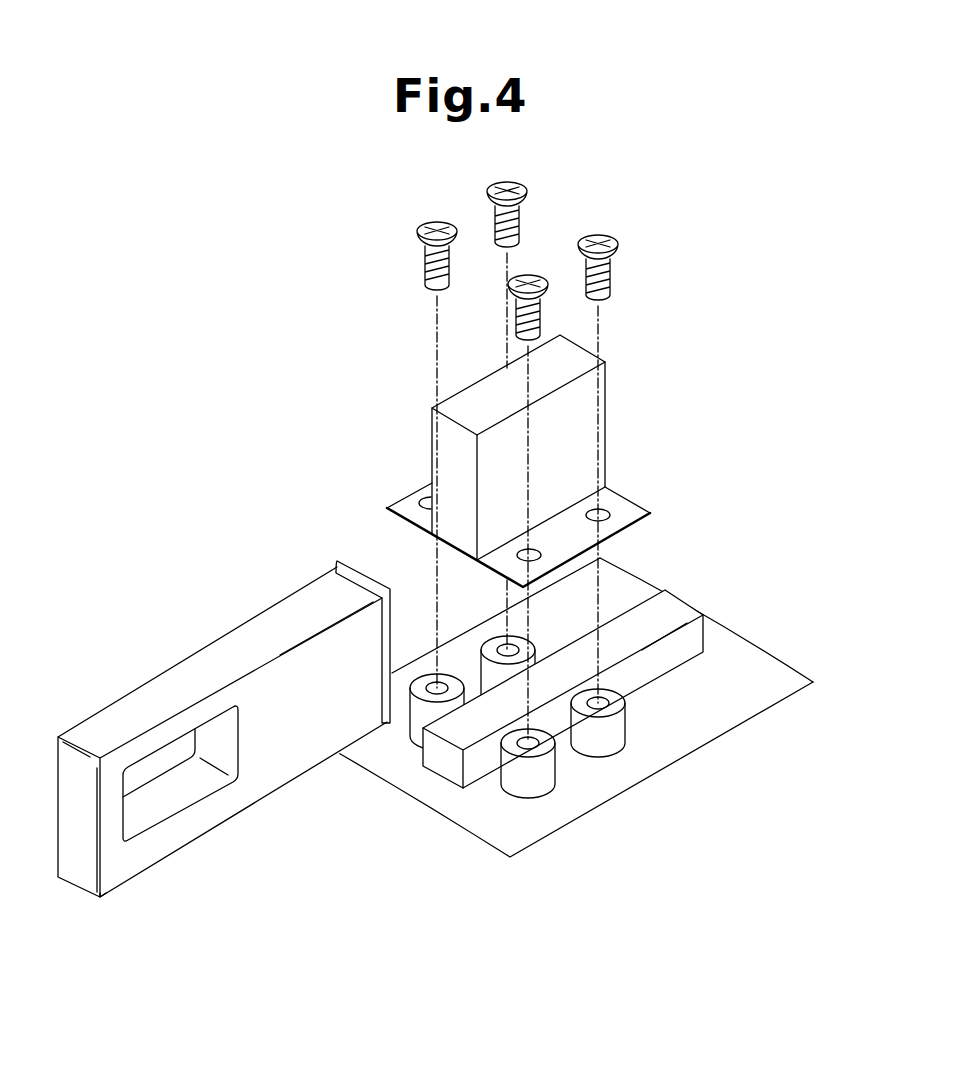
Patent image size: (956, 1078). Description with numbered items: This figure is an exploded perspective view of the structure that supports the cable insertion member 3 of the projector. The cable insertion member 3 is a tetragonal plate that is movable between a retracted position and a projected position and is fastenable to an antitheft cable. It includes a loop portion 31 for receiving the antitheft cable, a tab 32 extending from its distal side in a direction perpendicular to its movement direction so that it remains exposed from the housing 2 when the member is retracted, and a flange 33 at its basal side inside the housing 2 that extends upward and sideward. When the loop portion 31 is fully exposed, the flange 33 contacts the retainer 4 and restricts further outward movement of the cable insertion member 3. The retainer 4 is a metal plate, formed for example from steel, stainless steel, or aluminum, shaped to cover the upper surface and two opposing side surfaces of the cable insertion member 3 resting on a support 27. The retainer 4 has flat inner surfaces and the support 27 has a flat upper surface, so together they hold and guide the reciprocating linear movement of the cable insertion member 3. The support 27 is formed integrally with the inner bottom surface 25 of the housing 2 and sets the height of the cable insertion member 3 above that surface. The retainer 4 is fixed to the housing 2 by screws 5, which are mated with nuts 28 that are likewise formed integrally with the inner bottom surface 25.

The housing 2 is at (753, 729).
The inner bottom surface 25 is at (738, 648).
The support 27 is at (669, 599).
The nuts 28 is at (419, 687).
The cable insertion member 3 is at (187, 658).
The loop portion 31 is at (181, 794).
The tab 32 is at (108, 889).
The flange 33 is at (336, 559).
The retainer 4 is at (606, 415).
The screws 5 is at (437, 222).